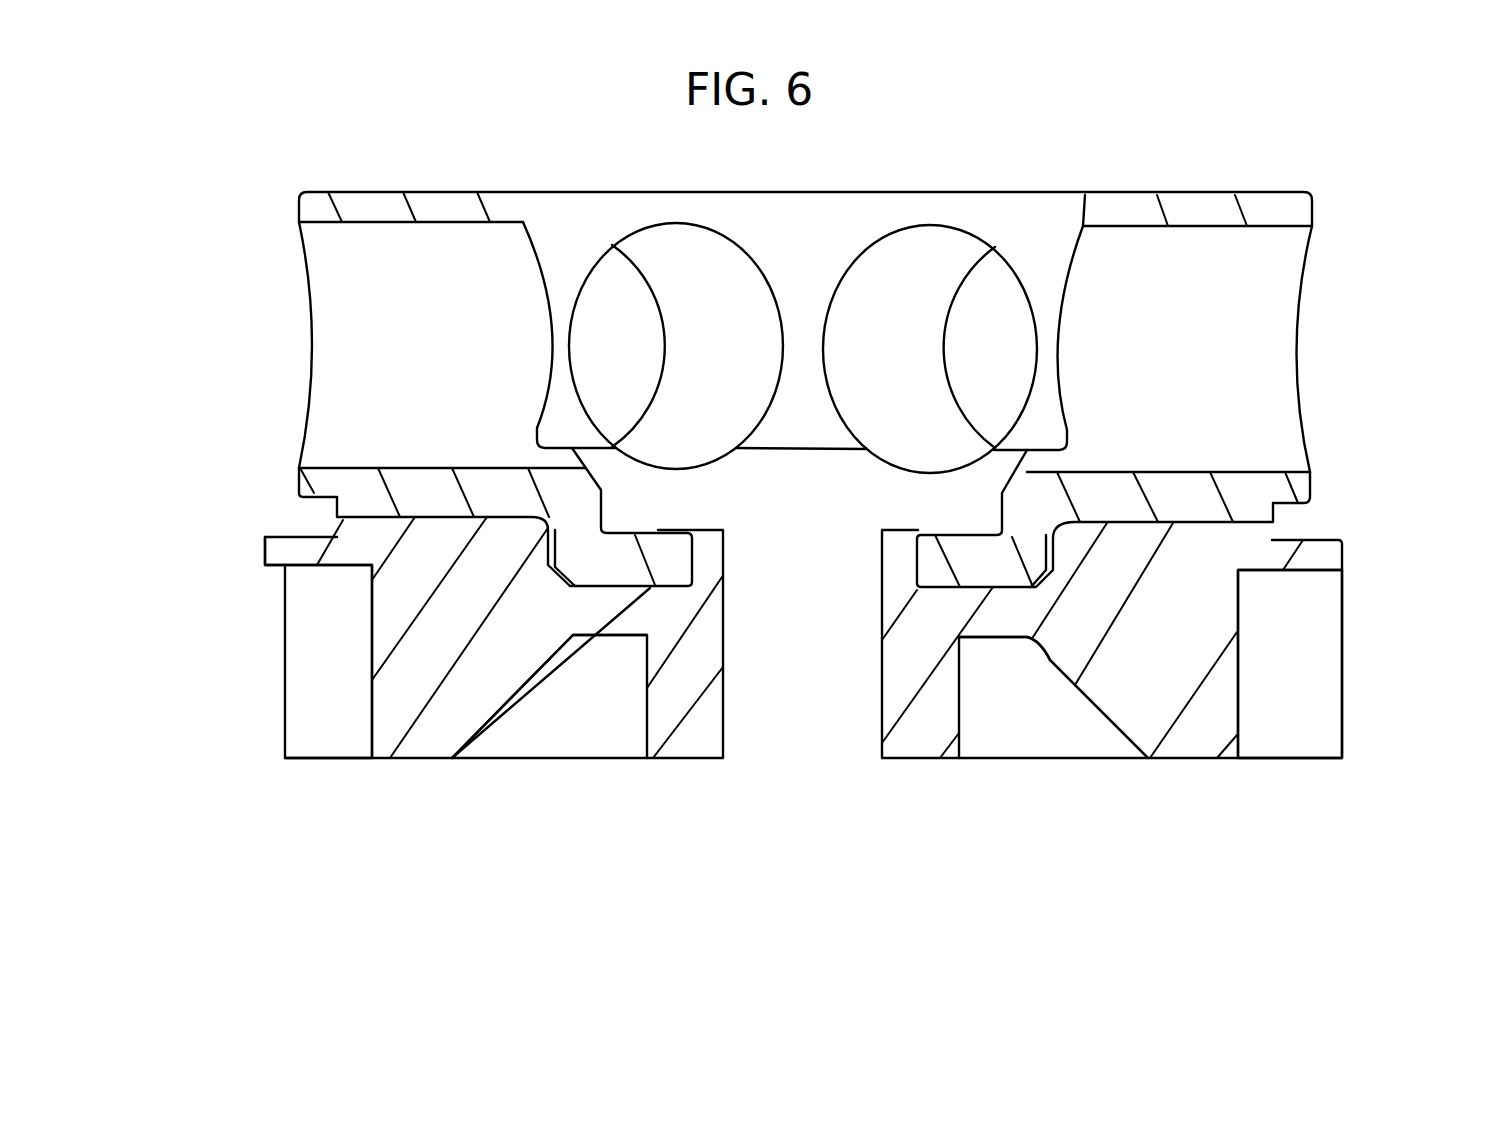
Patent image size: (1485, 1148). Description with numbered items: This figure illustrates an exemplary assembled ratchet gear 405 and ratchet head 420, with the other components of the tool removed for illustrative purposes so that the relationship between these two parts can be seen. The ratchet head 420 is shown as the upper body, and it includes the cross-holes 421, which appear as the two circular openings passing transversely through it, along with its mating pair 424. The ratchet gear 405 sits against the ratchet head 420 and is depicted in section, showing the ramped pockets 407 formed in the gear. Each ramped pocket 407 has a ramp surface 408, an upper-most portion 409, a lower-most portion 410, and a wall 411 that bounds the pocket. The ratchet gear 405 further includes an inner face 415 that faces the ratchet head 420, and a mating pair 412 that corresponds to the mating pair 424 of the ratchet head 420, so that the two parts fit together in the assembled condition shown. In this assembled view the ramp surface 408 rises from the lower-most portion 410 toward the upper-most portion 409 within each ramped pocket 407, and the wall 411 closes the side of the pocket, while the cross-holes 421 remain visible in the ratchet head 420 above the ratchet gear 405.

The ratchet gear 405 is at (268, 655).
The ramped pockets 407 is at (392, 793).
The ramp surface 408 is at (525, 688).
The upper-most portion 409 is at (575, 637).
The lower-most portion 410 is at (447, 743).
The wall 411 is at (372, 712).
The mating pair 412 is at (1010, 592).
The inner face 415 is at (623, 636).
The ratchet head 420 is at (283, 251).
The cross-holes 421 is at (928, 248).
The mating pair 424 is at (1212, 525).